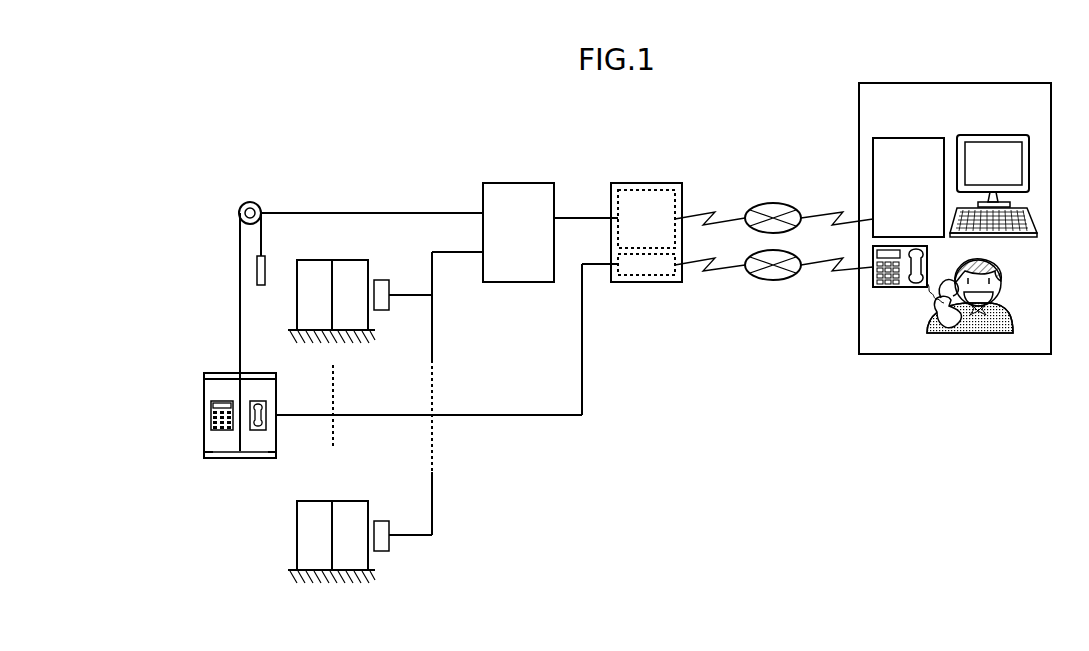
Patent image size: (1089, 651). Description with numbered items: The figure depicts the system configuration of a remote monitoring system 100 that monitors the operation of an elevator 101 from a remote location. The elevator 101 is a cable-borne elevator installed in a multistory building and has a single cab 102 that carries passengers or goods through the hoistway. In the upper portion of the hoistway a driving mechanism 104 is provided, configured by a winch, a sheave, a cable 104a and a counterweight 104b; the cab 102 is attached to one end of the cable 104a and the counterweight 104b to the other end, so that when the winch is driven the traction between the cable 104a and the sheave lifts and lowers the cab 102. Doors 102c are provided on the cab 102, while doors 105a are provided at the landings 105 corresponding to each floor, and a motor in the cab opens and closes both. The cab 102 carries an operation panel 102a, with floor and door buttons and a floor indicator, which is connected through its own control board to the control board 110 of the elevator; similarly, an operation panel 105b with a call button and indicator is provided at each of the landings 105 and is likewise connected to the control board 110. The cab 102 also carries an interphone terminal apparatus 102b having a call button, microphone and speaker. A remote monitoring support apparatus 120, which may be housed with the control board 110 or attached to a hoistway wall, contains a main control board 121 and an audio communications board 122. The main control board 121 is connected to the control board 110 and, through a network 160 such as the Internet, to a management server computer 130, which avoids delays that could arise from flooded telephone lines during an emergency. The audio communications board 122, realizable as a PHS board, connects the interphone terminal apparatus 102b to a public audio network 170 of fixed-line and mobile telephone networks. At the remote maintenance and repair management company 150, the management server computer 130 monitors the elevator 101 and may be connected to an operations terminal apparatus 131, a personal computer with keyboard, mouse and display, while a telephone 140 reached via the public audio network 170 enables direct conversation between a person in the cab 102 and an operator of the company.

The remote monitoring system 100 is at (427, 131).
The elevator 101 is at (250, 197).
The cab 102 is at (268, 390).
The operation panel 102a is at (222, 403).
The interphone terminal apparatus 102b is at (262, 425).
The doors 102c is at (232, 442).
The driving mechanism 104 is at (239, 214).
The cable 104a is at (240, 287).
The counterweight 104b is at (266, 258).
The landings 105 is at (286, 324).
The doors 105a is at (353, 266).
The operation panel 105b is at (381, 280).
The control board 110 is at (523, 183).
The remote monitoring support apparatus 120 is at (650, 183).
The main control board 121 is at (677, 196).
The audio communications board 122 is at (660, 275).
The management server computer 130 is at (873, 157).
The operations terminal apparatus 131 is at (1015, 237).
The telephone 140 is at (893, 287).
The maintenance and repair management company 150 is at (1001, 83).
The network 160 is at (775, 203).
The public audio network 170 is at (773, 280).